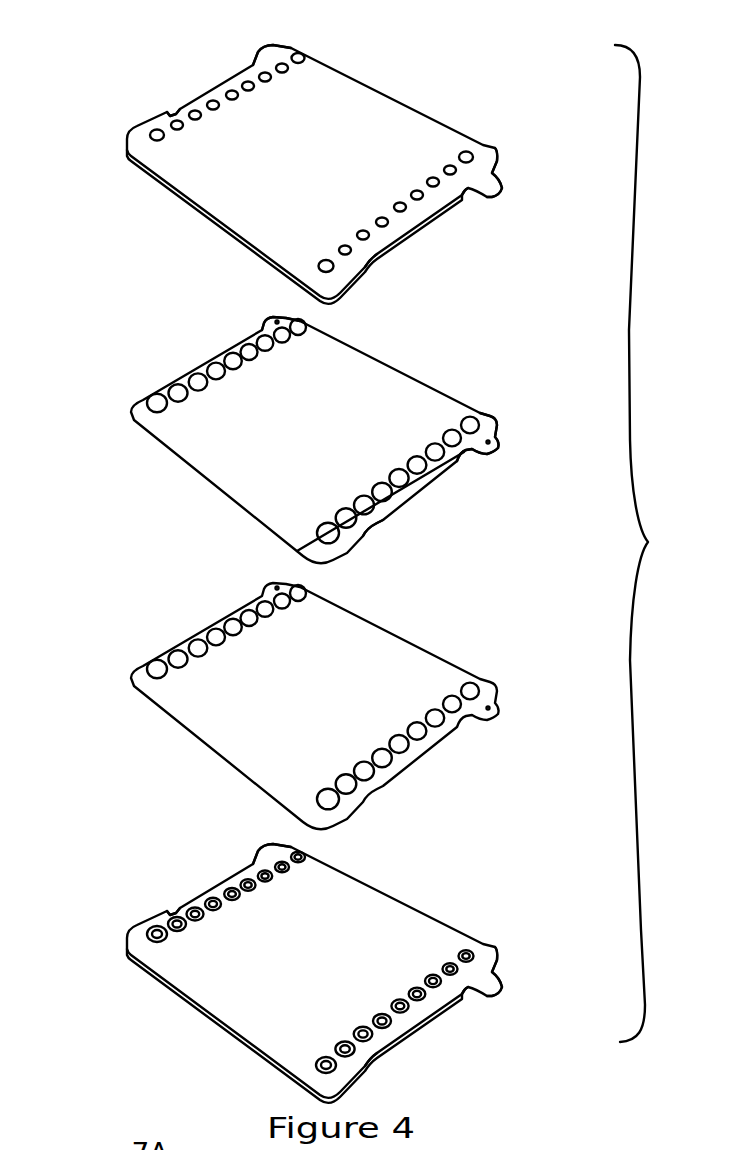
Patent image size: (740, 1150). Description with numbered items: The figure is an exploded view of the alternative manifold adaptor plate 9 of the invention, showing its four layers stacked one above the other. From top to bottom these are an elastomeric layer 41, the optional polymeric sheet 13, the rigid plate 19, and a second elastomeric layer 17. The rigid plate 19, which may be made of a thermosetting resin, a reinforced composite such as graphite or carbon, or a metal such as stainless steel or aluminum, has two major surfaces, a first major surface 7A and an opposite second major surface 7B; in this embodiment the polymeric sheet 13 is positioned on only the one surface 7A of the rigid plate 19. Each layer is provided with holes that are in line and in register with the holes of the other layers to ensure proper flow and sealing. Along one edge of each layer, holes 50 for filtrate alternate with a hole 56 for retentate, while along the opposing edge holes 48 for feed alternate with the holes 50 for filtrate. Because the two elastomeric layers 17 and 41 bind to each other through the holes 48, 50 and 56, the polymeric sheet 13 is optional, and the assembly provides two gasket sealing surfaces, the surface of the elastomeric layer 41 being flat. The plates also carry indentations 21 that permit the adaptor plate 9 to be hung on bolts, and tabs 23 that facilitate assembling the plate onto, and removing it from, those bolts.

The alternative manifold adaptor plate 9 is at (647, 543).
The polymeric sheet 13 is at (467, 363).
The elastomeric layer 17 is at (427, 890).
The rigid plate 19 is at (467, 640).
The indentations 21 is at (254, 63).
The tabs 23 is at (255, 60).
The elastomeric layer 41 is at (427, 91).
The holes for feed 48 is at (155, 130).
The holes for filtrate 50 is at (446, 169).
The hole for retentate 56 is at (471, 152).
The first major surface 7A is at (177, 443).
The second major surface 7B is at (199, 468).